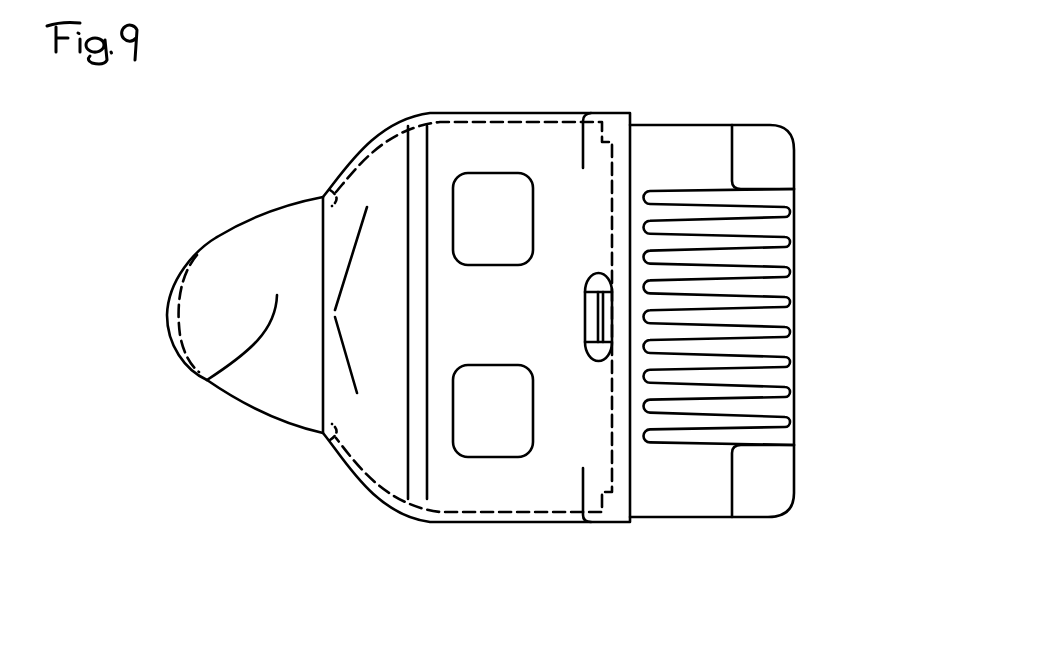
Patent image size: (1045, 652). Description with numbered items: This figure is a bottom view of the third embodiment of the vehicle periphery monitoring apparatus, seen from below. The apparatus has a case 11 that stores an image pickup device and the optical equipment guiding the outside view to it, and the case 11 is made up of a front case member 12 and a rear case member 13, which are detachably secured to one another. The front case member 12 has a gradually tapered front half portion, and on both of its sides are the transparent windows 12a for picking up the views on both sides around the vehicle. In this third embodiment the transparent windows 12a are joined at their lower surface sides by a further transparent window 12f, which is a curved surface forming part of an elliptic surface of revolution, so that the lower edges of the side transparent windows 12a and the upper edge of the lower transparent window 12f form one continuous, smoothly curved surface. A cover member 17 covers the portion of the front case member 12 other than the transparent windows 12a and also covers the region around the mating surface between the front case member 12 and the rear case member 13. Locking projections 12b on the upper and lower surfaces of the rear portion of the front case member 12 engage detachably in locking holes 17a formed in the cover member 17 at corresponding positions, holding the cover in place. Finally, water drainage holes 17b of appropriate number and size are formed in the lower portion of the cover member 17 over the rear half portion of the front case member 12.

The case 11 is at (800, 110).
The front case member 12 is at (217, 237).
The transparent windows 12a is at (262, 215).
The locking projections 12b is at (598, 316).
The transparent window 12f is at (207, 380).
The rear case member 13 is at (797, 163).
The cover member 17 is at (478, 112).
The locking holes 17a is at (603, 277).
The water drainage holes 17b is at (481, 175).